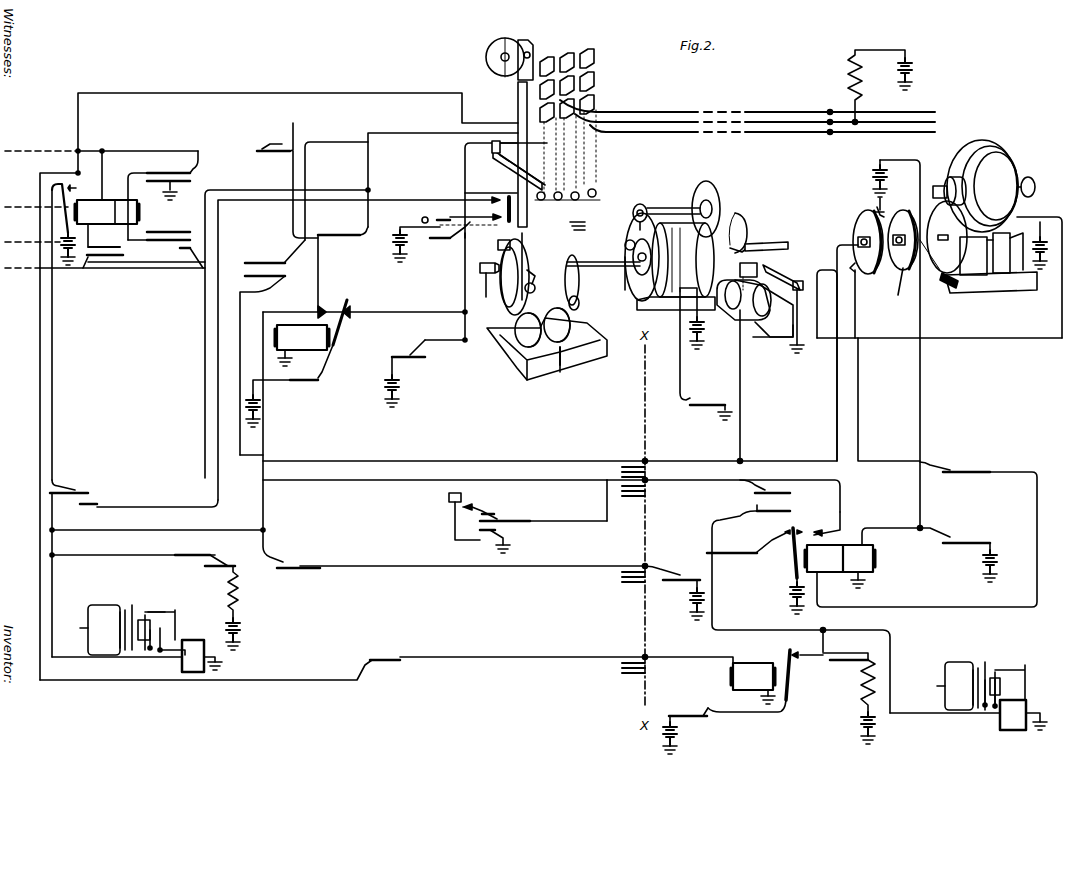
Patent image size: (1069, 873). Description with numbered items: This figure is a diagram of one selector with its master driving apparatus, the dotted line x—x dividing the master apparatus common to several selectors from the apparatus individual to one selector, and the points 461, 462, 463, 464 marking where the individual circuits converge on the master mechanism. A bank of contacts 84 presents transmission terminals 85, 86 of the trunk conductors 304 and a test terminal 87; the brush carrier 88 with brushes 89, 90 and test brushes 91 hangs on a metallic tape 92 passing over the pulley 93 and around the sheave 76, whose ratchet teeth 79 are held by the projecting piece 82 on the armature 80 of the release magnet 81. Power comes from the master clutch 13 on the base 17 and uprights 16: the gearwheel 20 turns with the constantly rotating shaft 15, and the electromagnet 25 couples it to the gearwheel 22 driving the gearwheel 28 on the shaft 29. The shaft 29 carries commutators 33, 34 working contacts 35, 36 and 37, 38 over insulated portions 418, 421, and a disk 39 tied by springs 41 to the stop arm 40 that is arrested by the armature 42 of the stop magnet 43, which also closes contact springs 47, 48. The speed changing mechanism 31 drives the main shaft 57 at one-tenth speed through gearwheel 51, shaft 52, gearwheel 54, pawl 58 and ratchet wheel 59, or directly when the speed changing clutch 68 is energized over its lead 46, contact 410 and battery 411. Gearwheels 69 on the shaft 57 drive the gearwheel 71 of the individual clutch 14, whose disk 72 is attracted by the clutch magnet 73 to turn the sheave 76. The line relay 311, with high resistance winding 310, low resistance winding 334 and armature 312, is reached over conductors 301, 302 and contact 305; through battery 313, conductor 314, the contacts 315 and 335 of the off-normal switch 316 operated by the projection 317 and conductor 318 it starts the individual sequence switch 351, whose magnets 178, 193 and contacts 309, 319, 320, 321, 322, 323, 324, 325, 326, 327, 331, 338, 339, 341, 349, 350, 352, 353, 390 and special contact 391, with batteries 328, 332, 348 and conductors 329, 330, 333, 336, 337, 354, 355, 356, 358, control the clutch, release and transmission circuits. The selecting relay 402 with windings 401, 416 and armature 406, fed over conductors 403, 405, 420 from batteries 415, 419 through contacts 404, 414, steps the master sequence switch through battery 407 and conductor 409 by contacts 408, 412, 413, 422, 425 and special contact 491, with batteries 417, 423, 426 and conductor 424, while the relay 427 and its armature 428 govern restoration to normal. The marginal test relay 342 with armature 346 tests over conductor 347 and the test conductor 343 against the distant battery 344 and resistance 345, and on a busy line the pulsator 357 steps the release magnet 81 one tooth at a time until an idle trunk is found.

The master clutch mechanism 13 is at (1003, 160).
The individual clutch mechanism 14 is at (603, 253).
The shaft 15 is at (1036, 205).
The uprights 16 is at (1040, 250).
The base 17 is at (1005, 288).
The gearwheel 20 is at (1035, 190).
The gearwheel 22 is at (945, 180).
The master clutch magnet 25 is at (1008, 183).
The gearwheel 28 is at (945, 253).
The shaft 29 is at (783, 242).
The speed changing mechanism 31 is at (684, 204).
The commutator 33 is at (884, 209).
The commutator 34 is at (903, 218).
The contact 35 is at (852, 268).
The contact 36 is at (852, 244).
The contact 37 is at (947, 237).
The contact 38 is at (948, 285).
The disk 39 is at (742, 224).
The stop arm 40 is at (745, 246).
The springs 41 is at (722, 270).
The armature 42 is at (746, 276).
The stop magnet 43 is at (755, 308).
The wire 46 is at (690, 312).
The contact spring 47 is at (781, 270).
The contact spring 48 is at (815, 295).
The gearwheel 51 is at (714, 197).
The shaft 52 is at (675, 208).
The gearwheel 54 is at (636, 206).
The main driving shaft 57 is at (600, 262).
The pawl 58 is at (627, 245).
The ratchet wheel 59 is at (630, 290).
The speed changing clutch 68 is at (683, 260).
The gearwheels 69 is at (587, 228).
The gearwheel 71 is at (579, 278).
The disk 72 is at (578, 297).
The individual clutch magnet 73 is at (525, 277).
The sheave 76 is at (486, 272).
The teeth 79 is at (540, 275).
The armature 80 is at (528, 323).
The release magnet 81 is at (557, 325).
The projecting piece 82 is at (536, 289).
The bank of contacts 84 is at (588, 75).
The transmission terminal 85 is at (590, 100).
The transmission terminal 86 is at (576, 122).
The test terminal 87 is at (568, 124).
The brush carrier 88 is at (492, 146).
The brush 89 is at (580, 192).
The brush 90 is at (498, 160).
The test brushes 91 is at (592, 195).
The metallic tape 92 is at (532, 52).
The pulley 93 is at (487, 50).
The clutch magnet 178 is at (108, 615).
The stop magnet 193 is at (549, 692).
The conductor 301 is at (101, 142).
The conductor 302 is at (105, 273).
The trunk conductor 304 is at (700, 135).
The contact 305 is at (690, 112).
The individual sequence switch contact 309 is at (144, 251).
The high resistance winding 310 is at (107, 186).
The line relay 311 is at (77, 204).
The armature 312 is at (34, 206).
The battery 313 is at (37, 249).
The conductor 314 is at (235, 97).
The contacts 315 is at (513, 193).
The off-normal switch 316 is at (471, 241).
The projection 317 is at (520, 185).
The conductor 318 is at (212, 502).
The individual sequence switch contact 319 is at (135, 572).
The sequence switch contact 320 is at (81, 480).
The sequence switch contact 321 is at (179, 195).
The sequence switch contact 322 is at (190, 252).
The sequence switch contact 323 is at (265, 365).
The sequence switch contact 324 is at (300, 549).
The sequence switch contact 325 is at (342, 668).
The sequence switch contact 326 is at (428, 352).
The sequence switch contact 327 is at (455, 235).
The battery 328 is at (405, 382).
The conductor 329 is at (465, 335).
The conductor 330 is at (536, 313).
The individual sequence switch contact 331 is at (488, 535).
The battery 332 is at (392, 249).
The conductor 333 is at (490, 242).
The low resistance winding 334 is at (125, 200).
The off-normal switch contact 335 is at (525, 207).
The conductor 336 is at (430, 566).
The conductor 337 is at (190, 530).
The sequence switch contact 338 is at (343, 268).
The sequence switch contact 339 is at (322, 365).
The sequence switch contact 341 is at (490, 510).
The marginal test relay 342 is at (296, 421).
The test conductor 343 is at (670, 125).
The battery 344 is at (912, 70).
The resistance 345 is at (850, 74).
The armature 346 is at (339, 315).
The conductor 347 is at (411, 173).
The battery 348 is at (262, 402).
The sequence switch contact 349 is at (192, 186).
The sequence switch contact 350 is at (159, 228).
The individual sequence switch 351 is at (160, 652).
The sequence switch contact 352 is at (287, 180).
The sequence switch contact 353 is at (275, 255).
The conductor 354 is at (52, 425).
The wire 355 is at (205, 398).
The conductor 356 is at (365, 318).
The pulsator 357 is at (455, 523).
The conductor 358 is at (40, 443).
The sequence switch contact 390 is at (440, 220).
The special sequence switch contact 391 is at (156, 596).
The winding 401 is at (840, 558).
The selecting relay 402 is at (808, 532).
The conductor 403 is at (1037, 515).
The master sequence switch contact 404 is at (955, 466).
The conductor 405 is at (783, 385).
The armature 406 is at (794, 562).
The battery 407 is at (790, 590).
The master sequence switch contact 408 is at (757, 511).
The conductor 409 is at (828, 624).
The sequence switch contact 410 is at (690, 400).
The battery 411 is at (702, 330).
The sequence switch contact 412 is at (755, 488).
The sequence switch contact 413 is at (760, 546).
The sequence switch contact 414 is at (940, 540).
The battery 415 is at (988, 570).
The winding 416 is at (857, 566).
The battery 417 is at (1050, 260).
The insulated portion 418 is at (870, 272).
The battery 419 is at (876, 180).
The conductor 420 is at (920, 372).
The insulating portion 421 is at (898, 289).
The master sequence switch contact 422 is at (678, 572).
The battery 423 is at (696, 596).
The wire 424 is at (740, 712).
The sequence switch contact 425 is at (705, 710).
The battery 426 is at (680, 742).
The relay 427 is at (753, 683).
The armature 428 is at (790, 680).
The converging point 461 is at (645, 463).
The converging point 462 is at (645, 482).
The converging point 463 is at (620, 574).
The converging point 464 is at (645, 657).
The special master sequence switch contact 491 is at (860, 668).